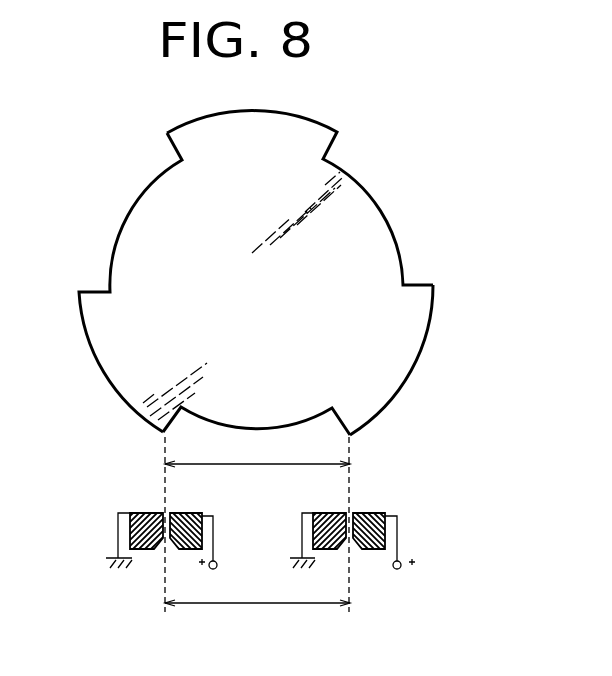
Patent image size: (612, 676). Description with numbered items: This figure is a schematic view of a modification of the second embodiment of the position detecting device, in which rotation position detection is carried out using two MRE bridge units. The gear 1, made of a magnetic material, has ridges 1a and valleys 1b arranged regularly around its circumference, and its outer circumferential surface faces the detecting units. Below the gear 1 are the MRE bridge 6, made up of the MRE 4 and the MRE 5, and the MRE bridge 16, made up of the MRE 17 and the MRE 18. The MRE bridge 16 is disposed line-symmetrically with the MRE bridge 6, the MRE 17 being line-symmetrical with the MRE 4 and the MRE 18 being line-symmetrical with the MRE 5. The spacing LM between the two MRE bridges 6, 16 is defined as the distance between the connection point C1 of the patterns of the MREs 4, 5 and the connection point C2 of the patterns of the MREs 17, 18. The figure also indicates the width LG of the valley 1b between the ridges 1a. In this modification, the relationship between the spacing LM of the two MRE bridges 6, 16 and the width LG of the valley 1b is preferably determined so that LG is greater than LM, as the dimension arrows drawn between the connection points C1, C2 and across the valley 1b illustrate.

The gear 1 is at (279, 273).
The ridges 1a is at (412, 372).
The valleys 1b is at (242, 428).
The MRE 4 is at (144, 513).
The MRE 5 is at (188, 513).
The MRE bridge 6 is at (131, 504).
The MRE bridge 16 is at (399, 504).
The MRE 17 is at (370, 513).
The MRE 18 is at (322, 513).
The connection point C1 is at (155, 557).
The connection point C2 is at (357, 558).
The width of the valley LG is at (257, 452).
The spacing of the two MRE bridges LM is at (257, 591).